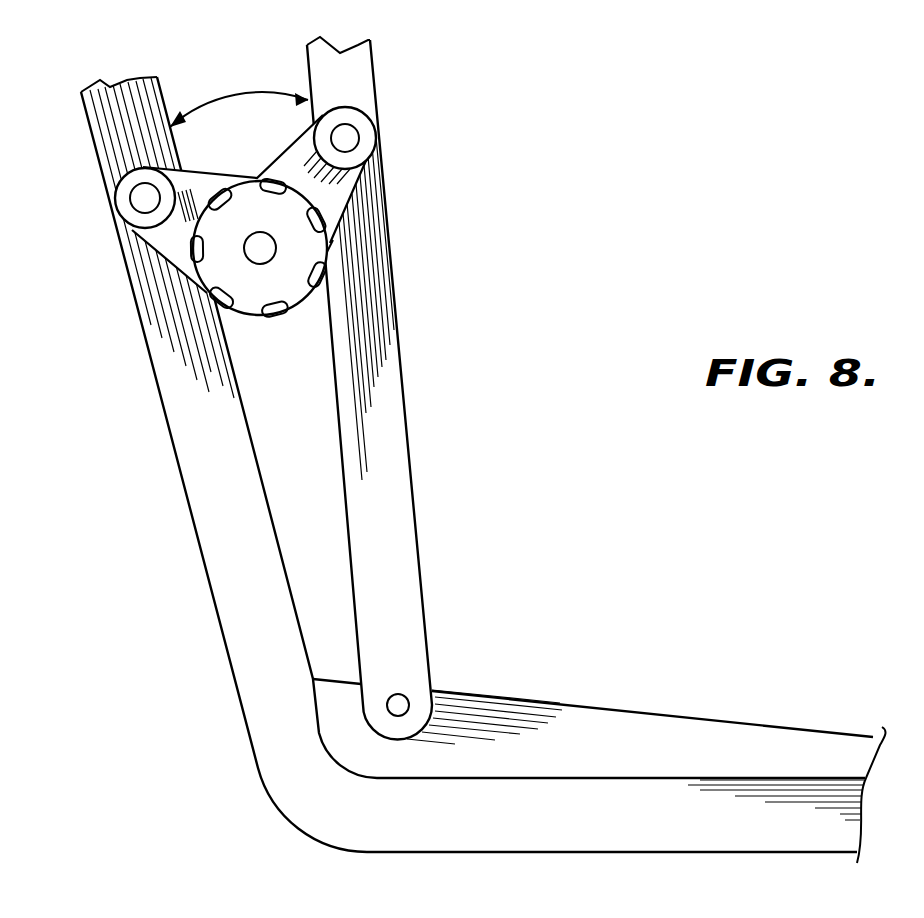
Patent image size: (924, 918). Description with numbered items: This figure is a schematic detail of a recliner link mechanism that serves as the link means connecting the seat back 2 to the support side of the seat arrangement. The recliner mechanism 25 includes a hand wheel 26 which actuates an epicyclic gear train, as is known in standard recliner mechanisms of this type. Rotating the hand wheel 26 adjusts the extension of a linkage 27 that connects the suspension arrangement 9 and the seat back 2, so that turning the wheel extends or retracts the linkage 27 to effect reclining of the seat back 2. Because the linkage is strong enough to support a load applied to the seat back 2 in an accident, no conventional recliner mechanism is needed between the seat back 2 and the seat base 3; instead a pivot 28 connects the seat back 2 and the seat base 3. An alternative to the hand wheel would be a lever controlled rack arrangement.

The seat back 2 is at (378, 457).
The seat base 3 is at (757, 788).
The suspension arrangement 9 is at (166, 382).
The recliner mechanism 25 is at (327, 252).
The hand wheel 26 is at (263, 287).
The linkage 27 is at (168, 238).
The pivot 28 is at (402, 702).